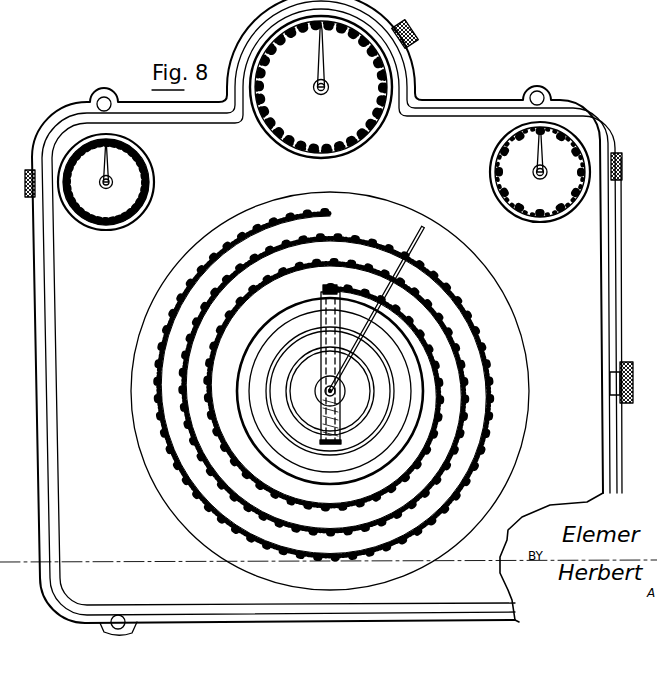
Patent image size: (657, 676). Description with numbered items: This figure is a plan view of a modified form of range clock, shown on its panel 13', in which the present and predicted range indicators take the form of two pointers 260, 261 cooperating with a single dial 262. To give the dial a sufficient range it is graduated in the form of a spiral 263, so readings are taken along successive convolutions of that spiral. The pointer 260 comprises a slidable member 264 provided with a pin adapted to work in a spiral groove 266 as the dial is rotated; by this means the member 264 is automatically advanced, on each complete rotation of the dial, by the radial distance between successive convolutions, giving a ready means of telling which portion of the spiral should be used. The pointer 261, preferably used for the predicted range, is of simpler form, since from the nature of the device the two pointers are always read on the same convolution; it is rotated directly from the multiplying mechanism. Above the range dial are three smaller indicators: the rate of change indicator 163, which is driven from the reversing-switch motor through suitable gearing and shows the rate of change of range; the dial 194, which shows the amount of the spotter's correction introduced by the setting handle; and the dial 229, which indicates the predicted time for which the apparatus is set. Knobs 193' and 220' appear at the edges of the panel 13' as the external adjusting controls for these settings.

The panel housing 13' is at (329, 317).
The rate of change indicator 163 is at (106, 191).
The adjusting knob 193' is at (429, 40).
The dial 194 is at (321, 100).
The adjusting knob 220' is at (630, 156).
The dial 229 is at (540, 180).
The pointer 260 is at (321, 315).
The pointer 261 is at (370, 325).
The dial 262 is at (521, 328).
The spiral 263 is at (468, 316).
The slidable member 264 is at (323, 292).
The spiral groove 266 is at (378, 418).